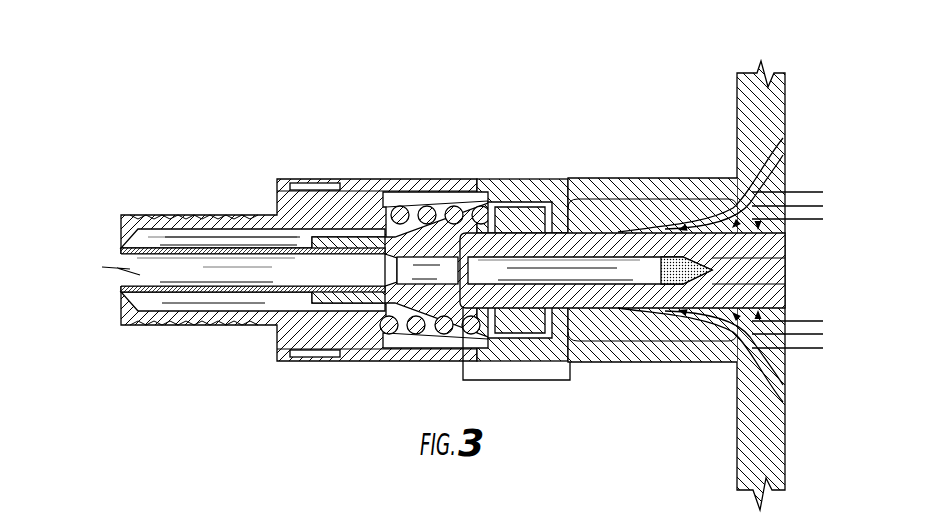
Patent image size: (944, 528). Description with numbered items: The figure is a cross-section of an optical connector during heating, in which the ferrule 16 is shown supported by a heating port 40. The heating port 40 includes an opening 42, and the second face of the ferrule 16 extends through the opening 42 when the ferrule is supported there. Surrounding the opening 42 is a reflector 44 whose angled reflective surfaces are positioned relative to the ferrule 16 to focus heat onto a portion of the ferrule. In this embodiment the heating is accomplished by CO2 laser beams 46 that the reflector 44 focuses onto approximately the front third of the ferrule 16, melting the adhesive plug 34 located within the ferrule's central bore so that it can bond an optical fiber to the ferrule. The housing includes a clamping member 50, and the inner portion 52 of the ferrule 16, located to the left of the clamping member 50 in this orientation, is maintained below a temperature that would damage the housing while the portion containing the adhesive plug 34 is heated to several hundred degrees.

The ferrule 16 is at (712, 302).
The adhesive plug 34 is at (670, 281).
The heating port 40 is at (774, 95).
The opening 42 is at (797, 167).
The reflector 44 is at (775, 157).
The CO2 laser beams 46 is at (803, 190).
The clamping member 50 is at (562, 215).
The inner portion 52 is at (512, 380).